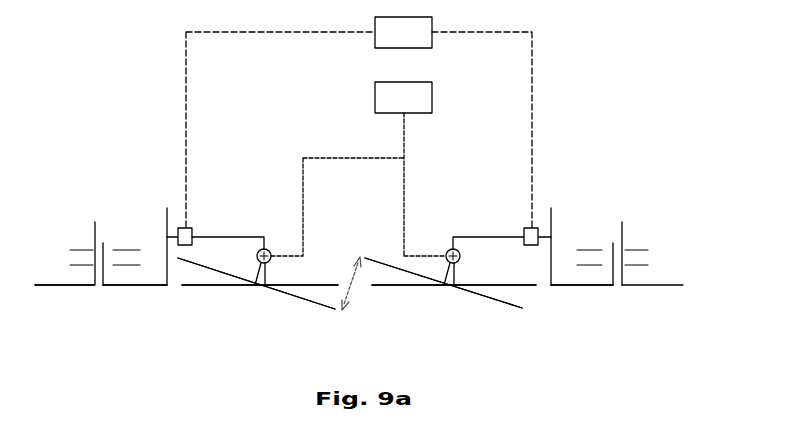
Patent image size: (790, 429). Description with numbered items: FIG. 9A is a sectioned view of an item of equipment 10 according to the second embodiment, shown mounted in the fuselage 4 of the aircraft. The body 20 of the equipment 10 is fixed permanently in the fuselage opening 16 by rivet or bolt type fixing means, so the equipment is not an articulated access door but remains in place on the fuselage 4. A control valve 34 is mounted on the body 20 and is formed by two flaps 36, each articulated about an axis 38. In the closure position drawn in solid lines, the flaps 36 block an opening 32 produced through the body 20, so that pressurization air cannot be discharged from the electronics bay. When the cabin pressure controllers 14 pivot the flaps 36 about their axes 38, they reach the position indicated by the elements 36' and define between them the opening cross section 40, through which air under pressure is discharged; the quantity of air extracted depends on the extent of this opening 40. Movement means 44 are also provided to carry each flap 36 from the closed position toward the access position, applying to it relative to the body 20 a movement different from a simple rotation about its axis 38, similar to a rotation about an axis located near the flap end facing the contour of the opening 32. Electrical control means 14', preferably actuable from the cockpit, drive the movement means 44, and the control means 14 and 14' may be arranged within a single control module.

The fuselage 4 is at (53, 285).
The item of equipment 10 is at (620, 175).
The cabin pressure controller 14 is at (358, 169).
The electrical control means 14' is at (359, 122).
The fuselage opening 16 is at (104, 231).
The body 20 is at (139, 286).
The opening 32 is at (170, 214).
The control valve 34 is at (300, 336).
The flap 36 is at (374, 278).
The pivoted flap position 36' is at (350, 309).
The axis 38 is at (259, 251).
The opening cross section 40 is at (352, 285).
The movement means 44 is at (184, 226).